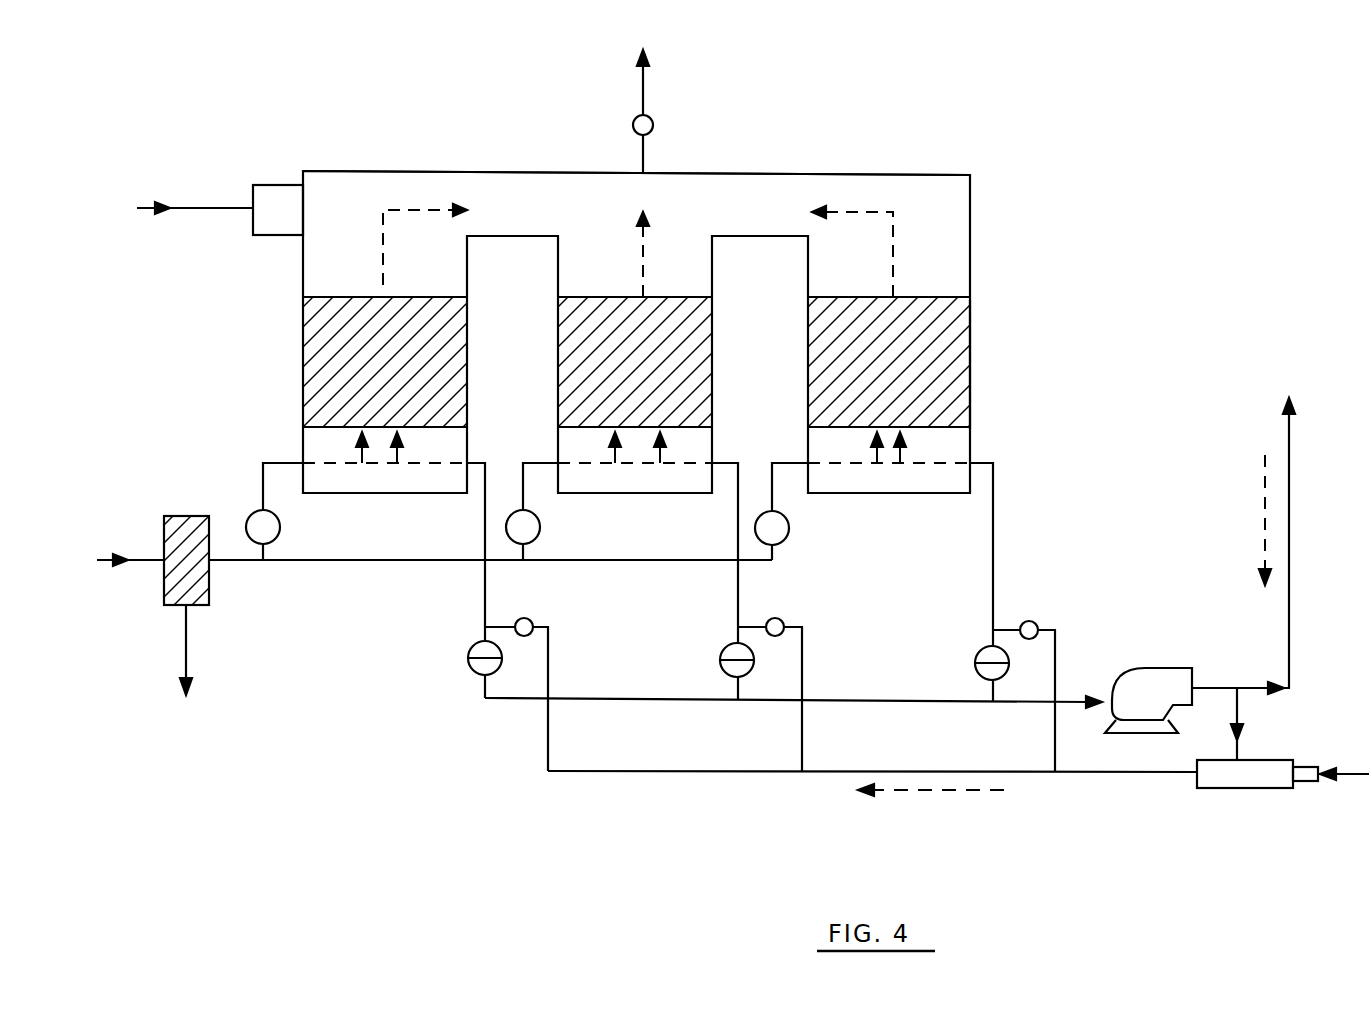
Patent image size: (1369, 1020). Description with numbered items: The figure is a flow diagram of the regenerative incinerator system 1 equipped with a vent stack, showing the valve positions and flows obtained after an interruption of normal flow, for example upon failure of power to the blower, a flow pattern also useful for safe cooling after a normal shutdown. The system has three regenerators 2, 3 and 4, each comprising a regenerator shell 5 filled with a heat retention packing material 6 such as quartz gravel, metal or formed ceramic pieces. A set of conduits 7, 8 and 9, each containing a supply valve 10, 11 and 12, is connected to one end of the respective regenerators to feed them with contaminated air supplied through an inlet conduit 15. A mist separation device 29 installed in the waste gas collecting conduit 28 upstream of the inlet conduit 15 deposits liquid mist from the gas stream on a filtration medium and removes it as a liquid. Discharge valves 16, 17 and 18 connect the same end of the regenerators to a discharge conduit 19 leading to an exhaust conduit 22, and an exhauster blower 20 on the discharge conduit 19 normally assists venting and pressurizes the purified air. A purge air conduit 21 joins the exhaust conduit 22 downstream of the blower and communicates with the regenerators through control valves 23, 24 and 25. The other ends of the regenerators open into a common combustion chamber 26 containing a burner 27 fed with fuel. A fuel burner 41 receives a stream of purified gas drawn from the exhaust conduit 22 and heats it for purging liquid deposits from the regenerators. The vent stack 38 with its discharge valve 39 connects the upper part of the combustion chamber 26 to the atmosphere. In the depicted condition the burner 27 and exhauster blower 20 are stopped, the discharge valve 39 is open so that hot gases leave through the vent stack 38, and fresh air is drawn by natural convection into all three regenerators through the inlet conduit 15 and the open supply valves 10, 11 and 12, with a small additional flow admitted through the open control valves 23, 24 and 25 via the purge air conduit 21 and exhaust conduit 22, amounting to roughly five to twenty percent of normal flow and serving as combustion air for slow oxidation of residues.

The regenerative incinerator system 1 is at (970, 232).
The regenerator 2 is at (333, 314).
The regenerator 3 is at (590, 317).
The regenerator 4 is at (822, 318).
The regenerator shell 5 is at (970, 322).
The heat retention packing material 6 is at (918, 397).
The conduit 7 is at (263, 474).
The conduit 8 is at (535, 462).
The conduit 9 is at (790, 463).
The supply valve 10 is at (281, 528).
The supply valve 11 is at (541, 530).
The supply valve 12 is at (790, 530).
The inlet conduit 15 is at (312, 565).
The discharge valve 16 is at (468, 658).
The discharge valve 17 is at (720, 658).
The discharge valve 18 is at (975, 662).
The discharge conduit 19 is at (1060, 700).
The exhauster blower 20 is at (1150, 668).
The purge air conduit 21 is at (1135, 780).
The exhaust conduit 22 is at (1289, 645).
The control valve 23 is at (533, 620).
The control valve 24 is at (785, 620).
The control valve 25 is at (1035, 621).
The combustion chamber 26 is at (529, 200).
The burner 27 is at (279, 200).
The waste gas collecting conduit 28 is at (142, 558).
The mist separation device 29 is at (209, 590).
The vent stack 38 is at (643, 158).
The discharge valve 39 is at (653, 117).
The fuel burner 41 is at (1265, 790).